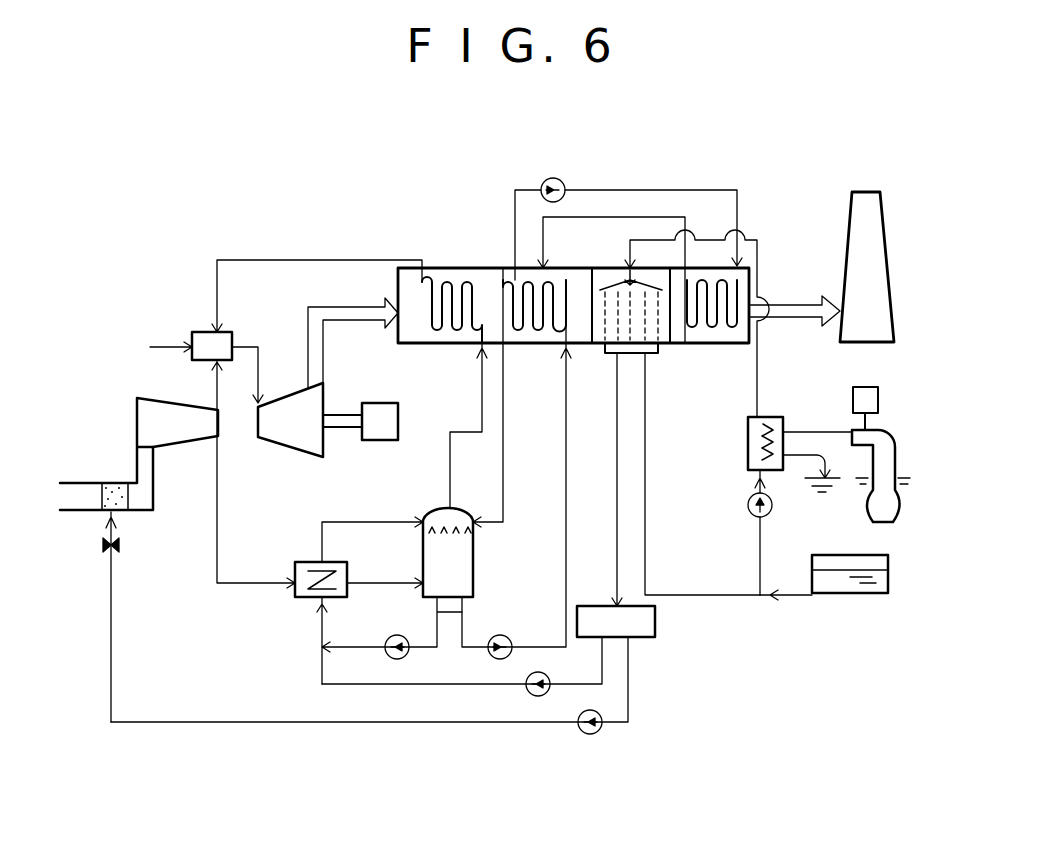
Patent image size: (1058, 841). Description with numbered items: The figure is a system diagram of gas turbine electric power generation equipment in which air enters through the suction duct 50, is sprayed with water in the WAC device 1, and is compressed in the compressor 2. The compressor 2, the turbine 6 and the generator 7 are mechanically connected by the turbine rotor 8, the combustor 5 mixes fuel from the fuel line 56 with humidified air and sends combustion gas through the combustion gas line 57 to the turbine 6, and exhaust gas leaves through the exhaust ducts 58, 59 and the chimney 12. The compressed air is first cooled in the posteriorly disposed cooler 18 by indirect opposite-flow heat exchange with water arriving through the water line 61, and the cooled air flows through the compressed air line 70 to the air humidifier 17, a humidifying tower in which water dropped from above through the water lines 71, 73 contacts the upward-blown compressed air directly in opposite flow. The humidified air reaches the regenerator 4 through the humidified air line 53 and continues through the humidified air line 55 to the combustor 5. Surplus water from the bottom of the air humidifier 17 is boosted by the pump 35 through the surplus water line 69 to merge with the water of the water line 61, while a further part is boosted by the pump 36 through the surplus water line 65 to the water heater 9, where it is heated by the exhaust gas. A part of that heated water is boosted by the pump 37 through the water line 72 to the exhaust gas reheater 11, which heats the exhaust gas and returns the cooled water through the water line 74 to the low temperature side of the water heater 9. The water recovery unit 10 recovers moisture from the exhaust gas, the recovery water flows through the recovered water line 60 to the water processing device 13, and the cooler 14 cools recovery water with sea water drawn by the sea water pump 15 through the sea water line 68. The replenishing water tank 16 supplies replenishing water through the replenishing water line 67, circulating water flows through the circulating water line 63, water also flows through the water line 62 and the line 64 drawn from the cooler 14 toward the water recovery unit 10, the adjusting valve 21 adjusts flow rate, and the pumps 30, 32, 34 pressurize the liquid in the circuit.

The WAC device 1 is at (112, 482).
The compressor 2 is at (177, 422).
The regenerator 4 is at (447, 344).
The combustor 5 is at (212, 347).
The turbine 6 is at (290, 420).
The generator 7 is at (380, 421).
The turbine rotor 8 is at (338, 430).
The water heater 9 is at (500, 270).
The water recovery unit 10 is at (662, 354).
The exhaust gas reheater 11 is at (704, 345).
The chimney 12 is at (867, 267).
The water processing device 13 is at (616, 621).
The cooler 14 is at (772, 414).
The sea water pump 15 is at (891, 454).
The replenishing water tank 16 is at (869, 574).
The air humidifier 17 is at (466, 555).
The posteriorly disposed cooler 18 is at (310, 598).
The adjusting valve 21 is at (93, 617).
The pump 30 is at (462, 679).
The pump 32 is at (608, 735).
The pump 34 is at (738, 544).
The pump 35 is at (394, 630).
The pump 36 is at (499, 630).
The pump 37 is at (551, 174).
The suction duct 50 is at (142, 512).
The humidified air line 53 is at (449, 432).
The humidified air line 55 is at (323, 259).
The fuel line 56 is at (160, 346).
The combustion gas line 57 is at (251, 339).
The exhaust duct 58 is at (358, 322).
The exhaust duct 59 is at (797, 304).
The recovered water line 60 is at (614, 425).
The water line 61 is at (320, 668).
The water line 62 is at (220, 724).
The circulating water line 63 is at (649, 452).
The water line 64 is at (760, 252).
The surplus water line 65 is at (462, 655).
The replenishing water line 67 is at (796, 597).
The sea water line 68 is at (813, 431).
The surplus water line 69 is at (440, 655).
The compressed air line 70 is at (372, 582).
The water line 71 is at (374, 521).
The water line 72 is at (665, 190).
The water line 73 is at (505, 392).
The water line 74 is at (598, 218).